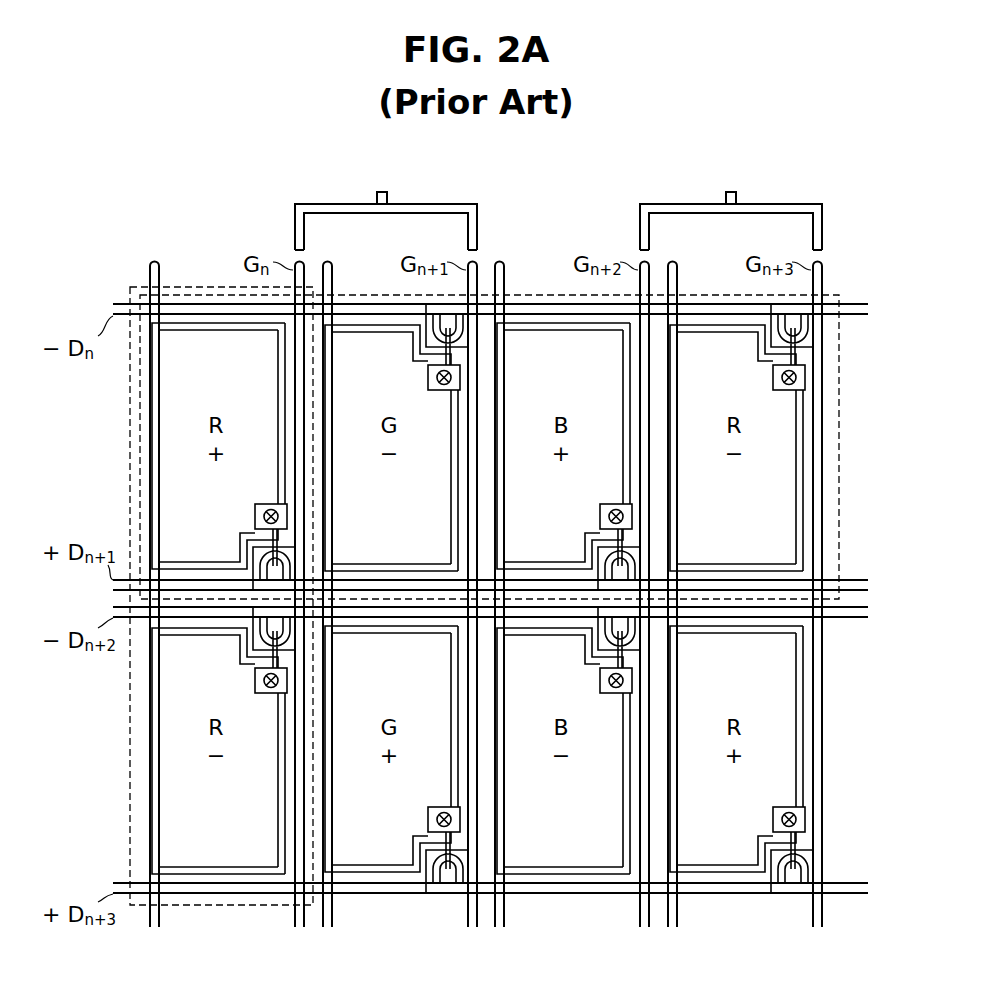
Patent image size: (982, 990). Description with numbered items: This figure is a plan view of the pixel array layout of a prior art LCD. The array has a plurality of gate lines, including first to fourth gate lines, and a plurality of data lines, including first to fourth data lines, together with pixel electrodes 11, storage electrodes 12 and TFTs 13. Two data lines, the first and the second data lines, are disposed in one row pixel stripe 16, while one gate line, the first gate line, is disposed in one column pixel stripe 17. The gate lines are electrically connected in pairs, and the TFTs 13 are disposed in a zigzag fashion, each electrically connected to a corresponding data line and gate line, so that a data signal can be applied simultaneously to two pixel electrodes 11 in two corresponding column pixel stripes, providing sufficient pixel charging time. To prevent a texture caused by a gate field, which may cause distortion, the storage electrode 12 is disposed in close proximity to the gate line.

The pixel electrode 11 is at (190, 383).
The storage electrode 12 is at (148, 422).
The TFT 13 is at (258, 547).
The row pixel stripe 16 is at (841, 445).
The column pixel stripe 17 is at (221, 903).